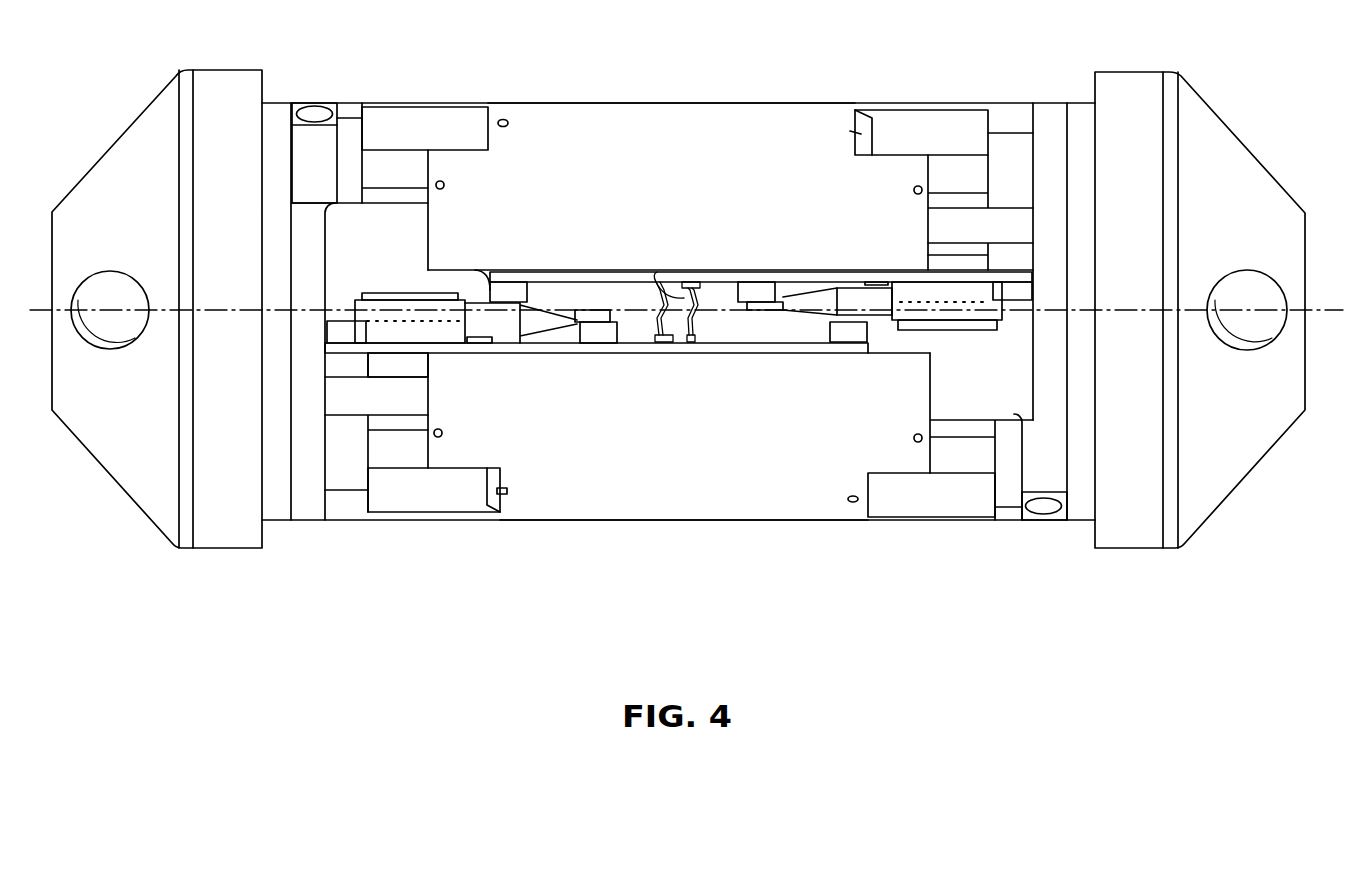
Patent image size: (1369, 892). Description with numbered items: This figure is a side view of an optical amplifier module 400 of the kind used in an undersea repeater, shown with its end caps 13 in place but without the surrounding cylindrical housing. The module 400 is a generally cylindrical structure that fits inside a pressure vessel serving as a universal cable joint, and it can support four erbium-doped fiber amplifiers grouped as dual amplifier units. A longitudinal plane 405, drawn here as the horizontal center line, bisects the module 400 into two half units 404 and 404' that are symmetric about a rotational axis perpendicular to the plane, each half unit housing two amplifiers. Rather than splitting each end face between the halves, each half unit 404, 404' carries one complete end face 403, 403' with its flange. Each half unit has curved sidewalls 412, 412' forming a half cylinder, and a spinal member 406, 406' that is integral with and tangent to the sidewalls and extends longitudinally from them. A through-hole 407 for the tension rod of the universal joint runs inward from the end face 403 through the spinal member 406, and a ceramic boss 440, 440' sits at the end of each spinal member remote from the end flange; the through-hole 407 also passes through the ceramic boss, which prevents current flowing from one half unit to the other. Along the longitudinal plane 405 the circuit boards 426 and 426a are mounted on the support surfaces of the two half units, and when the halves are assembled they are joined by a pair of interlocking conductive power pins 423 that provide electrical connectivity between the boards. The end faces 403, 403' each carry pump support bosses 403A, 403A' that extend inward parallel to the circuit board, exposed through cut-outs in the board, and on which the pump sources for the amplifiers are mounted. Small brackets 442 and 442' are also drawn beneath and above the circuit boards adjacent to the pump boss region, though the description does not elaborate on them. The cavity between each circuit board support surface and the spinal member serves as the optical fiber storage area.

The end cap 13 is at (123, 492).
The optical amplifier module 400 is at (495, 603).
The end face 403 is at (664, 338).
The end face 403' is at (1012, 279).
The pump support boss 403A is at (438, 372).
The pump support boss 403A' is at (926, 243).
The half unit 404 is at (820, 468).
The half unit 404' is at (730, 154).
The longitudinal plane 405 is at (1328, 308).
The spinal member 406 is at (681, 499).
The spinal member 406' is at (697, 158).
The through-hole 407 is at (384, 292).
The curved sidewall 412 is at (684, 536).
The curved sidewall 412' is at (671, 86).
The interlocking conductive power pin 423 is at (668, 286).
The circuit board 426 is at (637, 356).
The circuit board 426a is at (583, 274).
The ceramic boss 440 is at (1036, 536).
The ceramic boss 440' is at (323, 121).
The bracket 442 is at (687, 355).
The bracket 442' is at (738, 263).